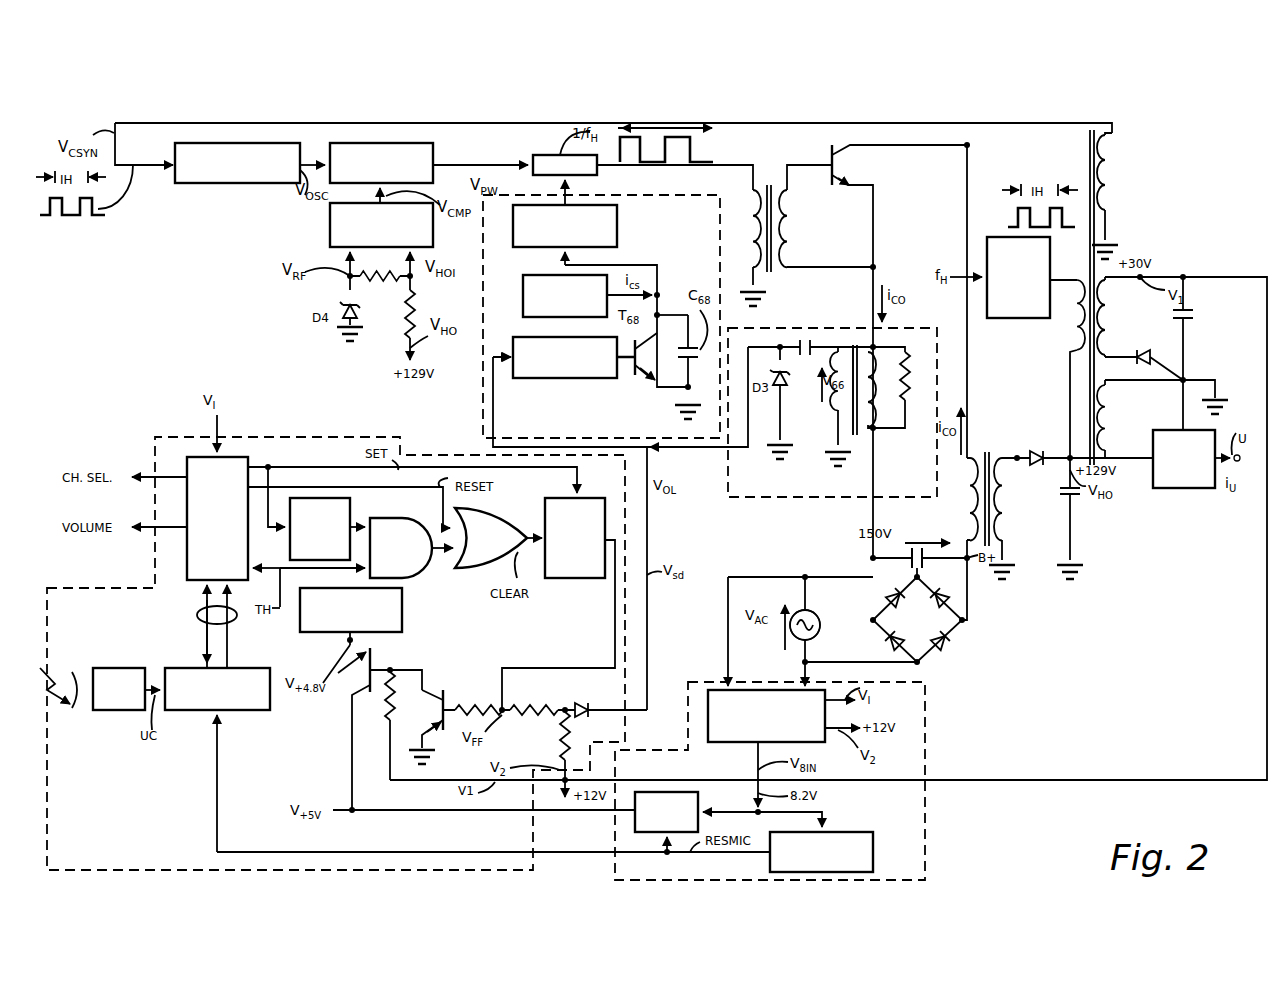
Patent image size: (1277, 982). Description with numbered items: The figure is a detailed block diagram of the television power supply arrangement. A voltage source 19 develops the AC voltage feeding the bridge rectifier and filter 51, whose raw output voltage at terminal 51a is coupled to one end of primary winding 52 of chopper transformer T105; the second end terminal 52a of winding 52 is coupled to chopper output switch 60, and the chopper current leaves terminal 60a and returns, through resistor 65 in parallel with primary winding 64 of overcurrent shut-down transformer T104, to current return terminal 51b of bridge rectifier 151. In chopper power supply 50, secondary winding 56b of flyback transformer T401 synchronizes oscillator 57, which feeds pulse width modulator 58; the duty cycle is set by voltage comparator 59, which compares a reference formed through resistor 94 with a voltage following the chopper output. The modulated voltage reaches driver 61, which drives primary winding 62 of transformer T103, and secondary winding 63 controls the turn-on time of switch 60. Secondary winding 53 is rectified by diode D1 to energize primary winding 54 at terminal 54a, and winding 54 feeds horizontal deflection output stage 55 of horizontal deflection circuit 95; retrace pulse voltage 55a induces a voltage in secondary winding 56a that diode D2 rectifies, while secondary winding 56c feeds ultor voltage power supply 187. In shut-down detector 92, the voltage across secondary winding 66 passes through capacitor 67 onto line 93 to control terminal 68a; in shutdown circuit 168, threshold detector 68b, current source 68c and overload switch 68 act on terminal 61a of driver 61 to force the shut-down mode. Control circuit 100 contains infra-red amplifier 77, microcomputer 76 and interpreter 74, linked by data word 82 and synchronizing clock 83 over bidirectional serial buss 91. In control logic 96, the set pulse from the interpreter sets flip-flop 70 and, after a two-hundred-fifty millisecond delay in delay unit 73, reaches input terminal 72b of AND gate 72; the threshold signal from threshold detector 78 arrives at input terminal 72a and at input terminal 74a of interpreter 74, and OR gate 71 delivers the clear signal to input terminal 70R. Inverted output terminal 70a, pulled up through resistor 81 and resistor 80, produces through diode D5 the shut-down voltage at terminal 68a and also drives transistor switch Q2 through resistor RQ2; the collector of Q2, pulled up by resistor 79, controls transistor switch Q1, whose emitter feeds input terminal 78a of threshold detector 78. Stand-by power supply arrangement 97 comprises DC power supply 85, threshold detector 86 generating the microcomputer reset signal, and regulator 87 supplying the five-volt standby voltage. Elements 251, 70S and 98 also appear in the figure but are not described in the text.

The chopper power supply 50 is at (470, 259).
The oscillator 57 is at (256, 183).
The pulse width modulator 58 is at (433, 181).
The voltage comparator 59 is at (330, 227).
The resistor 94 is at (418, 300).
The driver 61 is at (640, 168).
The terminal of driver 61a is at (597, 172).
The primary winding of transformer T103 62 is at (753, 210).
The secondary winding of transformer T103 63 is at (787, 235).
The chopper output switch 60 is at (832, 163).
The terminal of output switch 60a is at (873, 265).
The second end terminal of primary winding 52 52a is at (967, 150).
The overload switch 68 is at (617, 218).
The control terminal / signal summing junction 68a is at (647, 445).
The threshold detector 68b is at (513, 340).
The current source 68c is at (523, 278).
The shutdown circuit 168 is at (483, 395).
The line 93 is at (715, 438).
The capacitor 67 is at (803, 340).
The secondary winding of transformer T104 66 is at (819, 398).
The primary winding of transformer T104 64 is at (885, 389).
The resistor 65 is at (905, 405).
The shut-down detector 92 is at (818, 492).
The voltage source 19 is at (820, 615).
The filter capacitor 251 is at (870, 560).
The bridge rectifier 151 is at (928, 629).
The bridge rectifier and filter 51 is at (965, 587).
The output terminal 51a is at (990, 620).
The current return terminal 51b is at (873, 620).
The primary winding of chopper transformer T105 52 is at (970, 505).
The secondary winding of transformer T105 53 is at (1002, 520).
The terminal of primary winding 54 54a is at (1070, 456).
The horizontal deflection output stage 55 is at (987, 245).
The retrace pulse voltage 55a is at (1070, 240).
The primary winding of flyback transformer T401 54 is at (1077, 348).
The horizontal deflection circuit 95 is at (1053, 384).
The secondary winding of transformer T401 56a is at (1105, 300).
The secondary winding of transformer T401 56b is at (1105, 175).
The secondary winding of transformer T401 56c is at (1105, 405).
The ultor voltage power supply 187 is at (1195, 488).
The control circuit 100 is at (275, 782).
The control logic 96 is at (441, 642).
The interpreter 74 is at (250, 465).
The input terminal of interpreter 74a is at (268, 566).
The delay unit 73 is at (312, 498).
The AND gate 72 is at (395, 518).
The input terminal of AND gate 72a is at (375, 575).
The input terminal of AND gate 72b is at (370, 525).
The OR gate 71 is at (470, 568).
The flip-flop 70 is at (553, 578).
The input terminal of flip-flop 70R is at (525, 530).
The flip flop set input 70S is at (575, 495).
The inverted output terminal of flip-flop 70a is at (615, 590).
The threshold detector 78 is at (380, 632).
The input terminal of threshold detector 78a is at (348, 641).
The pull-up resistor 79 is at (385, 700).
The resistor 80 is at (525, 700).
The pull-up resistor 81 is at (560, 757).
The infra-red amplifier 77 is at (108, 710).
The microcomputer 76 is at (250, 710).
The bidirectional serial buss 91 is at (200, 618).
The synchronizing clock 83 is at (228, 650).
The data word 82 is at (207, 652).
The bus line 98 is at (146, 658).
The stand-by power supply arrangement 97 is at (671, 772).
The DC power supply 85 is at (718, 742).
The threshold detector 86 is at (873, 855).
The regulator 87 is at (640, 832).
The transformer T103 is at (770, 202).
The overcurrent shut-down transformer T104 is at (846, 394).
The chopper transformer T105 is at (987, 487).
The flyback transformer T401 is at (1088, 138).
The diode D1 is at (1035, 449).
The diode D2 is at (1143, 349).
The diode D5 is at (606, 701).
The transistor switch Q1 is at (355, 667).
The common emitter transistor switch Q2 is at (422, 721).
The resistor RQ2 is at (473, 697).